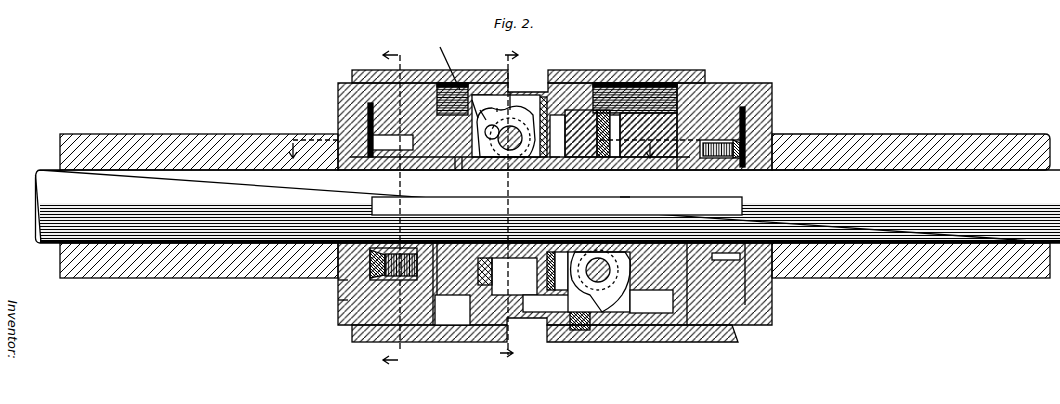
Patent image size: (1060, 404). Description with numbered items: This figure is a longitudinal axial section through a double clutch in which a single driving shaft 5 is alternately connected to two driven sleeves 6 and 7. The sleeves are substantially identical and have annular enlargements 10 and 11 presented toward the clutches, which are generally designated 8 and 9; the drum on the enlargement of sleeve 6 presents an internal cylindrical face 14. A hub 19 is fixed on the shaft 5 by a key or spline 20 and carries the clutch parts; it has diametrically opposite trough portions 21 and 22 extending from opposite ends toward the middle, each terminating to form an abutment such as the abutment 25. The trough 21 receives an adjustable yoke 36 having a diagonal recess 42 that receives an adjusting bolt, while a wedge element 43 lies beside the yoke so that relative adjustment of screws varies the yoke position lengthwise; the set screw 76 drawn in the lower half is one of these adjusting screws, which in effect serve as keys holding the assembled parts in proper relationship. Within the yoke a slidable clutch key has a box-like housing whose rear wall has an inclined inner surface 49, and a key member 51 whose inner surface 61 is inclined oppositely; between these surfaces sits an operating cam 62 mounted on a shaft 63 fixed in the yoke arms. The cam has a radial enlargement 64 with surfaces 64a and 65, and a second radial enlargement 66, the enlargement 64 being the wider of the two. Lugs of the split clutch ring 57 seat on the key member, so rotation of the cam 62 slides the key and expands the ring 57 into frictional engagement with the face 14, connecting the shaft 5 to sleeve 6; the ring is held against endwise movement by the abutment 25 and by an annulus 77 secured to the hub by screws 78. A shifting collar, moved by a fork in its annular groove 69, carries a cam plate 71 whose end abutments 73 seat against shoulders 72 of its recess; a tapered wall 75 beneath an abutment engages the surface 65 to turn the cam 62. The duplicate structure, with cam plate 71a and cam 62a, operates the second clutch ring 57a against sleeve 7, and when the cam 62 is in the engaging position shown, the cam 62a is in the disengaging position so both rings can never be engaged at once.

The shaft 5 is at (868, 175).
The sleeve 6 is at (182, 145).
The sleeve 7 is at (945, 142).
The clutch 8 is at (421, 201).
The clutch 9 is at (710, 352).
The annular enlargement 10 is at (338, 318).
The annular enlargement 11 is at (772, 312).
The internal cylindrical face 14 is at (342, 109).
The hub 19 is at (537, 327).
The key or spline 20 is at (735, 199).
The trough portion 21 is at (580, 157).
The trough portion 22 is at (497, 243).
The abutment 25 is at (443, 343).
The adjustable yoke 36 is at (574, 92).
The diagonal recess 42 is at (617, 157).
The wedge element 43 is at (453, 243).
The inner surface of rear wall 49 is at (549, 100).
The key member 51 is at (449, 110).
The clutch ring 57 is at (366, 129).
The clutch ring 57a is at (739, 85).
The inclined inner surface 61 is at (455, 162).
The operating cam 62 is at (541, 120).
The operating cam 62a is at (627, 198).
The shaft 63 is at (540, 157).
The radial enlargement 64 is at (438, 160).
The surface 64a is at (462, 157).
The surface 65 is at (481, 110).
The radial enlargement 66 is at (519, 90).
The annular groove 69 is at (512, 86).
The cam plate 71 is at (497, 108).
The cam plate 71a is at (483, 330).
The shoulder 72 is at (568, 95).
The abutment 73 is at (483, 100).
The tapered wall 75 is at (472, 100).
The set screw 76 is at (408, 325).
The annulus 77 is at (340, 300).
The screw 78 is at (338, 284).